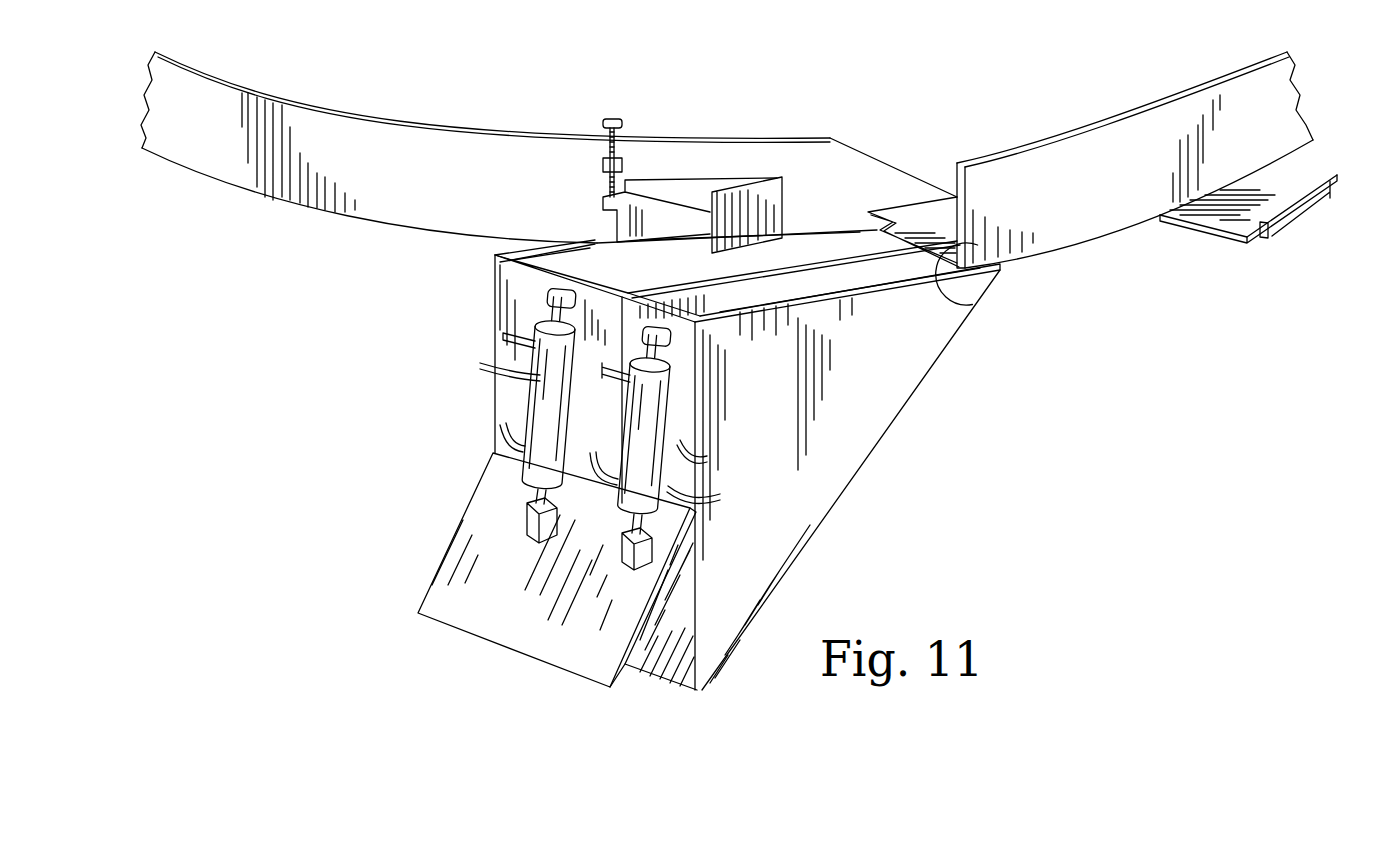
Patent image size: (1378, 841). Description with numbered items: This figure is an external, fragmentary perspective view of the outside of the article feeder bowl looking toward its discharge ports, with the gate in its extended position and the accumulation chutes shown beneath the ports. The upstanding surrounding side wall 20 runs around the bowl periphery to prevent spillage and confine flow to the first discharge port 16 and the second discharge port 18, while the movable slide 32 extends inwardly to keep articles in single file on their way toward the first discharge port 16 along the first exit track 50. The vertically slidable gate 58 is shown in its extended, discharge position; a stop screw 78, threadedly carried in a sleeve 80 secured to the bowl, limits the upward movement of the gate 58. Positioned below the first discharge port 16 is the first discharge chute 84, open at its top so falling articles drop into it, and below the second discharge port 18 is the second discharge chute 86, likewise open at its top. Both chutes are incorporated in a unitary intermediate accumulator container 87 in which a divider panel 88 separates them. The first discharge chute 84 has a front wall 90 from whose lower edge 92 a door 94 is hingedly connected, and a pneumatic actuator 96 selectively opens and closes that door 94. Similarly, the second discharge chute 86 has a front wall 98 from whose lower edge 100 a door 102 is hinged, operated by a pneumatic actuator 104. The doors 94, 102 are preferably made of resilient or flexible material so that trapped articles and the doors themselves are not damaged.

The first discharge port 16 is at (985, 304).
The second discharge port 18 is at (683, 185).
The surrounding side wall 20 is at (350, 142).
The movable slide 32 is at (1293, 183).
The first exit track 50 is at (920, 220).
The gate 58 is at (647, 223).
The stop screw 78 is at (612, 117).
The sleeve 80 is at (603, 160).
The first discharge chute 84 is at (787, 290).
The second discharge chute 86 is at (560, 265).
The intermediate accumulator container 87 is at (455, 296).
The divider panel 88 is at (830, 260).
The front wall 90 is at (682, 458).
The lower edge 92 is at (690, 505).
The door 94 is at (590, 655).
The pneumatic actuator 96 is at (665, 405).
The front wall 98 is at (505, 393).
The lower edge 100 is at (515, 453).
The door 102 is at (470, 615).
The pneumatic actuator 104 is at (538, 373).